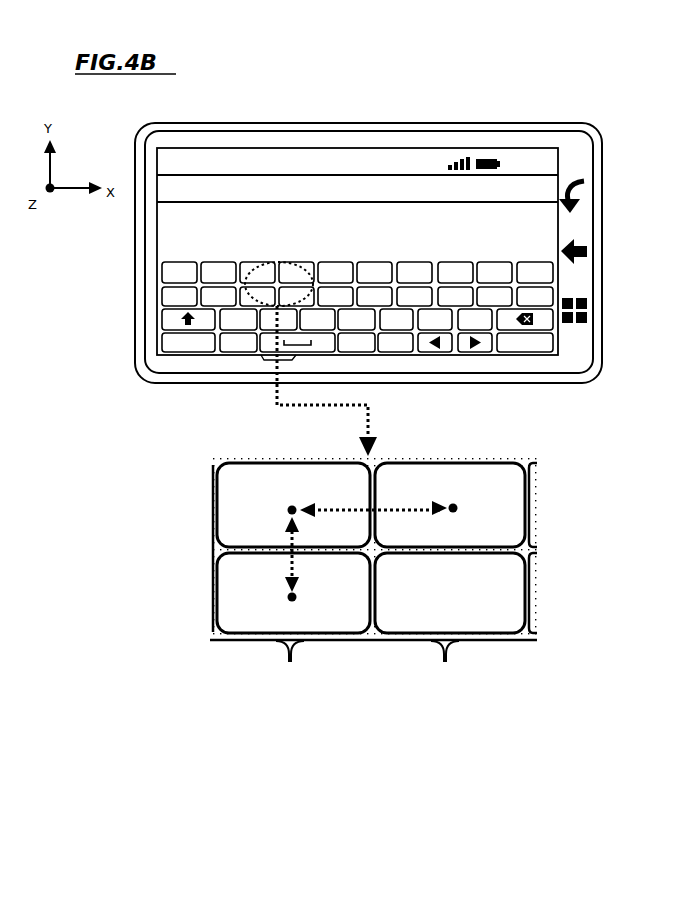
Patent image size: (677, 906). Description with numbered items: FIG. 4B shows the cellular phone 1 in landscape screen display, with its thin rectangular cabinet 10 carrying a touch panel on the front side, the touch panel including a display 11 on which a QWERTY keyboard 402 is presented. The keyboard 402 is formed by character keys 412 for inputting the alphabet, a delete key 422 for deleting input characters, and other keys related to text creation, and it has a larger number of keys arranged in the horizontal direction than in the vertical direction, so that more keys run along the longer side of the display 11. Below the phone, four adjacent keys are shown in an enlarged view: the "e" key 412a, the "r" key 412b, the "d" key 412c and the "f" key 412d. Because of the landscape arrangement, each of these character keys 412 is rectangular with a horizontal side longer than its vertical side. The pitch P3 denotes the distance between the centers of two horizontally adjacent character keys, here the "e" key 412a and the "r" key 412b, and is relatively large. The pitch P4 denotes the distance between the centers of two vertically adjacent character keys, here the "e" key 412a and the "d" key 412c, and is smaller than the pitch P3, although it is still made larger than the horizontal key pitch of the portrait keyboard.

The cellular phone 1 is at (183, 110).
The cabinet 10 is at (346, 123).
The display 11 is at (516, 148).
The QWERTY keyboard 402 is at (358, 259).
The character key 412 is at (467, 266).
The delete key 422 is at (562, 300).
The "e" key 412a is at (241, 481).
The "r" key 412b is at (495, 483).
The "d" key 412c is at (230, 600).
The "f" key 412d is at (481, 607).
The pitch between centers of horizontally adjacent character keys P3 is at (380, 505).
The pitch between centers of vertically adjacent character keys P4 is at (284, 538).